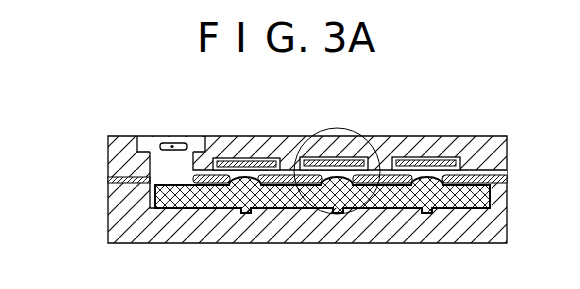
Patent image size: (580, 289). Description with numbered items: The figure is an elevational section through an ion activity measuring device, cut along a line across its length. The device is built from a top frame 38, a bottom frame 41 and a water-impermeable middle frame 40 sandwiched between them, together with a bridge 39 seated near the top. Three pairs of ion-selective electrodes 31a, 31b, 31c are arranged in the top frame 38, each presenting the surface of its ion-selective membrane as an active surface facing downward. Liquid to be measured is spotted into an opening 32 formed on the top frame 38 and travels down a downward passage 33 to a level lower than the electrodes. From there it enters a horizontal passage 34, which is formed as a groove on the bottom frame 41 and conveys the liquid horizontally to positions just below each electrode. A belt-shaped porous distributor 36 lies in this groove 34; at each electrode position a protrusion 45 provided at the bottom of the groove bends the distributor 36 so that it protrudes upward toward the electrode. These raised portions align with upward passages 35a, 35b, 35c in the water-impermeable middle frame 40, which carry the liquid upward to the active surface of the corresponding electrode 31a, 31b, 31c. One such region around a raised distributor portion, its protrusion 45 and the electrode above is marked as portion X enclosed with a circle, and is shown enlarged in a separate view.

The ion-selective electrode 31a is at (271, 158).
The ion-selective electrode 31b is at (345, 157).
The ion-selective electrode 31c is at (447, 157).
The opening 32 is at (148, 136).
The downward passage 33 is at (162, 180).
The horizontal passage 34 is at (219, 203).
The upward passage 35a is at (238, 158).
The upward passage 35b is at (313, 157).
The upward passage 35c is at (413, 157).
The porous distributor 36 is at (181, 209).
The top frame 38 is at (506, 136).
The bridge 39 is at (175, 142).
The water-impermeable middle frame 40 is at (135, 182).
The bottom frame 41 is at (108, 238).
The protrusion 45 is at (247, 212).
The portion enclosed with a circle X is at (358, 137).